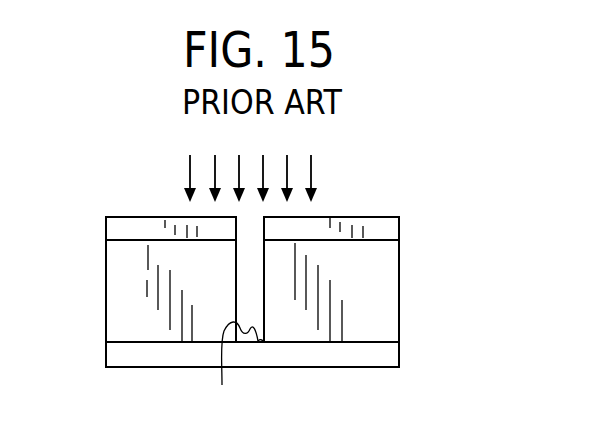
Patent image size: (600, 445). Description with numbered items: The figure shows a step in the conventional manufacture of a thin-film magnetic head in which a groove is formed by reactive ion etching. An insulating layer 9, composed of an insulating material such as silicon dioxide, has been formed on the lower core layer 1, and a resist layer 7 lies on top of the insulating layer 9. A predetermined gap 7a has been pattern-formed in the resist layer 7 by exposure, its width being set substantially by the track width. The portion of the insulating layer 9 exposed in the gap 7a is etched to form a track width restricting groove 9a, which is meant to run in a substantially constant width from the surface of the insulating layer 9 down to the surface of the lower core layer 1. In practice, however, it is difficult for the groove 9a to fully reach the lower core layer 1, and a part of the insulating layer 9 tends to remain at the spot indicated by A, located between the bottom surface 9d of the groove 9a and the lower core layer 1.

The lower core layer 1 is at (383, 352).
The resist layer 7 is at (383, 229).
The gap 7a is at (248, 231).
The insulating layer 9 is at (383, 296).
The track width restricting groove 9a is at (248, 296).
The bottom surface 9d is at (221, 362).
The spot A is at (265, 356).